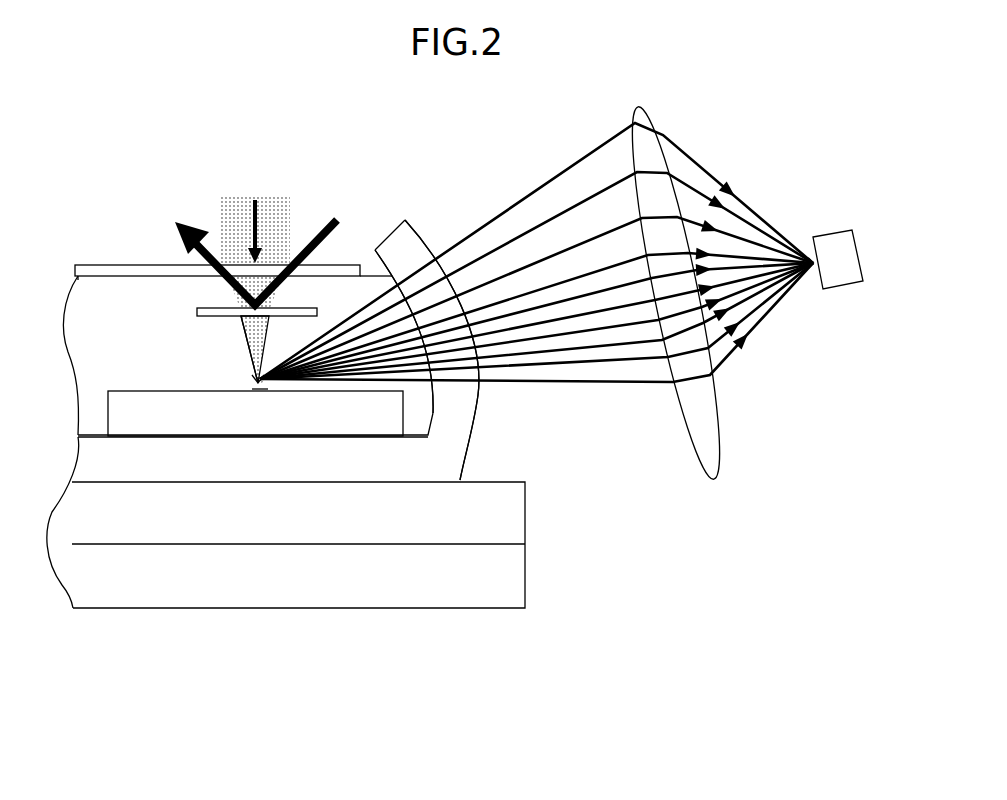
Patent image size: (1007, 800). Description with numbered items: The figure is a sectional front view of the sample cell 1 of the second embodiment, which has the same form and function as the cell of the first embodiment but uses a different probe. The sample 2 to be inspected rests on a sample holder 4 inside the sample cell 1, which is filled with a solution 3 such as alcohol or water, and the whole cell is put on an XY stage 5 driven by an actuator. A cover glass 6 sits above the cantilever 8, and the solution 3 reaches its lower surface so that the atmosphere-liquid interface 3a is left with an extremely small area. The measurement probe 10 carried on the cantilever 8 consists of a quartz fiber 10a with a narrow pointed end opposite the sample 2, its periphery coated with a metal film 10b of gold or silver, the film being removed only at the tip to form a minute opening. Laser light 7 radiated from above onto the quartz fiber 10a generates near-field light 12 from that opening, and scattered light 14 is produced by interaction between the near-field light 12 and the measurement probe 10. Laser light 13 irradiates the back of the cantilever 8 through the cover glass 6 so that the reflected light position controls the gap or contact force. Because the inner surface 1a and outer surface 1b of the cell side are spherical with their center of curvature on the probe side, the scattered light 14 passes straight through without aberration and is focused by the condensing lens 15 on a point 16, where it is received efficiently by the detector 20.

The sample cell 1 is at (417, 233).
The inner surface 1a is at (433, 413).
The outer surface 1b is at (480, 395).
The sample 2 is at (257, 390).
The solution 3 is at (90, 352).
The interface 3a is at (370, 268).
The sample holder 4 is at (318, 437).
The XY stage 5 is at (278, 610).
The cover glass 6 is at (152, 264).
The laser light 7 is at (220, 218).
The cantilever 8 is at (303, 307).
The measurement probe 10 is at (238, 328).
The quartz fiber 10a is at (248, 363).
The metal film 10b is at (242, 343).
The near-field light 12 is at (243, 380).
The laser light 13 is at (303, 218).
The scattered light 14 is at (560, 168).
The condensing lens 15 is at (717, 427).
The point 16 is at (813, 270).
The detector 20 is at (832, 230).